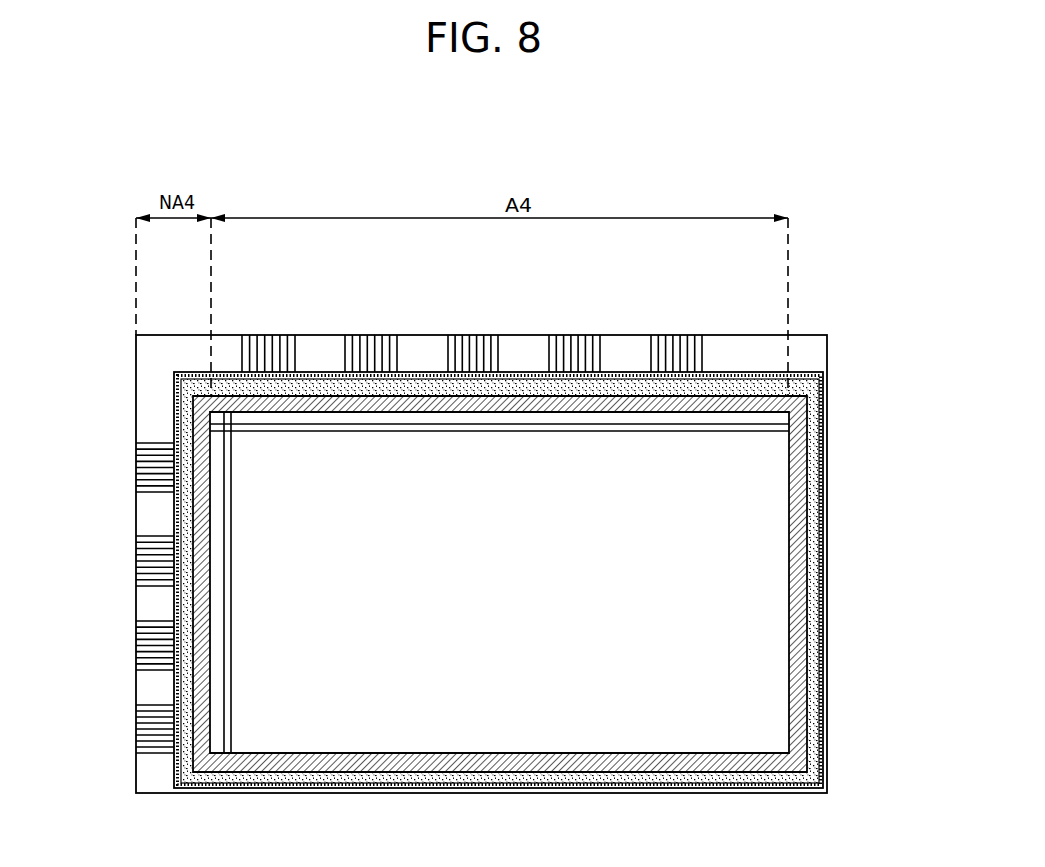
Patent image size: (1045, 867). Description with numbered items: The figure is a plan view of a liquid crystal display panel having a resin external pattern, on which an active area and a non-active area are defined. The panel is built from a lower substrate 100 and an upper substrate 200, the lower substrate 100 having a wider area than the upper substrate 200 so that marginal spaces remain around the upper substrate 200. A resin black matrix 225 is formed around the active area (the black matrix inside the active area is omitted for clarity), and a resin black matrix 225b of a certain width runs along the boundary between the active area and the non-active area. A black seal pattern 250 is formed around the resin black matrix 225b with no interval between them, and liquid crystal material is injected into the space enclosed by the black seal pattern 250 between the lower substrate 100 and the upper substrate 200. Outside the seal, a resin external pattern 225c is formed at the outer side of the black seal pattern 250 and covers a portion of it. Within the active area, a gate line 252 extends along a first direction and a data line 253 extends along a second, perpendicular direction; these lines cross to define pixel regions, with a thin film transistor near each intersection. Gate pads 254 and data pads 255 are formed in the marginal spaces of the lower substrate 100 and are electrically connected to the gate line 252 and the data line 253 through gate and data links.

The lower substrate 100 is at (815, 353).
The upper substrate 200 is at (518, 372).
The resin black matrix 225 is at (800, 478).
The resin black matrix 225b is at (805, 587).
The resin external pattern 225c is at (823, 632).
The black seal pattern 250 is at (415, 380).
The gate line 252 is at (380, 441).
The data line 253 is at (230, 560).
The gate pad 254 is at (145, 732).
The data pad 255 is at (674, 335).